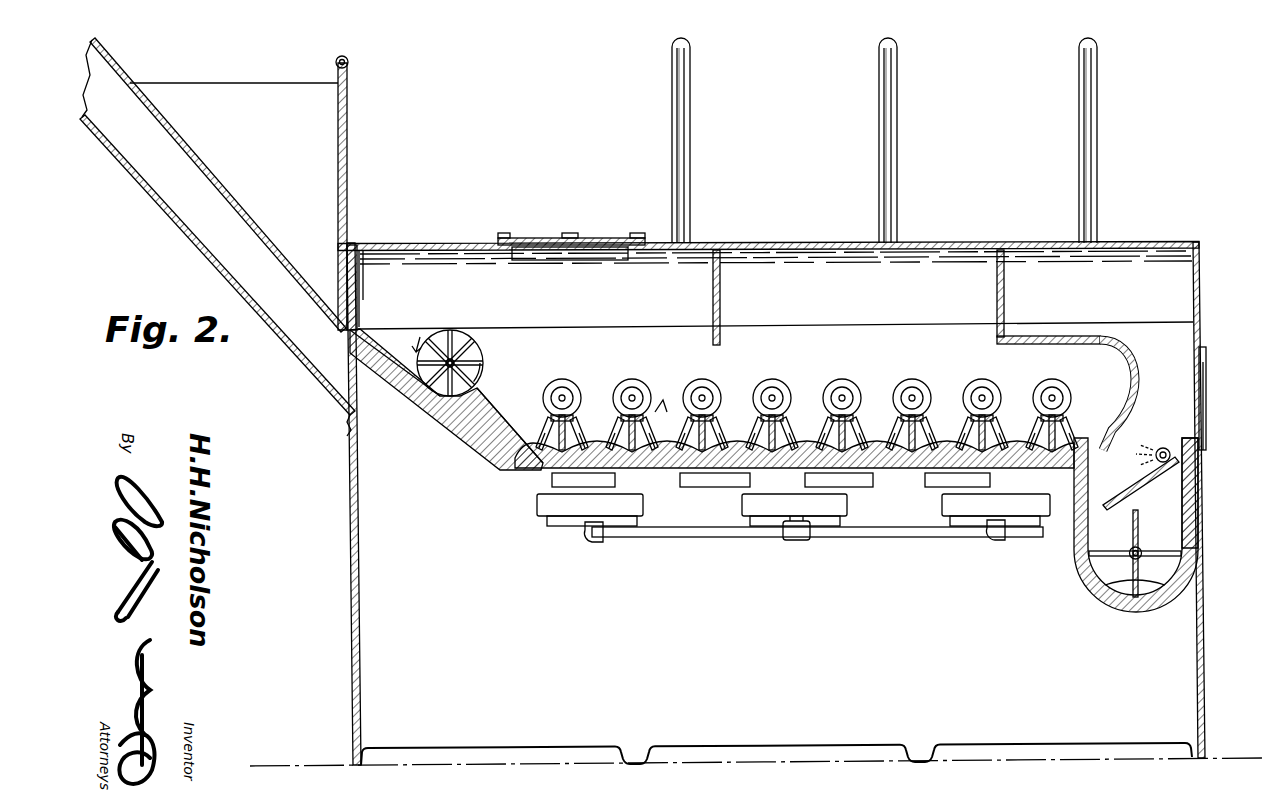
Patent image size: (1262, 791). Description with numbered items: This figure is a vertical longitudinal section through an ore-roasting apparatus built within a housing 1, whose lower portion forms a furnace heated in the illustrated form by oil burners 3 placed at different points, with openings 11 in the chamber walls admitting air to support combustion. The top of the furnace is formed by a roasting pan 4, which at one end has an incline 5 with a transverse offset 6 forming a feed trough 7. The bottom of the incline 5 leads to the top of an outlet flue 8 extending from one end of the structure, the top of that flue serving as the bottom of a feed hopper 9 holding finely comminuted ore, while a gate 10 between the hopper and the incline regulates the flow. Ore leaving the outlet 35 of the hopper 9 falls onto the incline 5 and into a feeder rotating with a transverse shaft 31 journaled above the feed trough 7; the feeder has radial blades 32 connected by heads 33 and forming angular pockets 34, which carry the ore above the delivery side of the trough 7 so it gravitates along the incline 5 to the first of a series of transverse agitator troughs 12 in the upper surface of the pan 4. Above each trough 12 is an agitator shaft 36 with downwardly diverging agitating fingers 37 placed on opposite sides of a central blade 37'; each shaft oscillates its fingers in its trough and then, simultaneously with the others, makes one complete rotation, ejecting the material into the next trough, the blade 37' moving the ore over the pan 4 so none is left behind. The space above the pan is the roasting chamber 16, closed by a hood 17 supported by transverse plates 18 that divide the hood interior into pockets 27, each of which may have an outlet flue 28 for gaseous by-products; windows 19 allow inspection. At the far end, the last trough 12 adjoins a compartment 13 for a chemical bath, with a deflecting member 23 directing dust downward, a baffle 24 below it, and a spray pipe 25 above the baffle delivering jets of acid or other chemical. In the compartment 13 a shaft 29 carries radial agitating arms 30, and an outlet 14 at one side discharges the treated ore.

The housing 1 is at (353, 602).
The oil burners 3 is at (565, 506).
The roasting pan 4 is at (656, 468).
The incline 5 is at (470, 438).
The transverse offset 6 is at (481, 398).
The feed trough 7 is at (432, 400).
The outlet flue 8 is at (298, 229).
The feed hopper 9 is at (287, 96).
The gate 10 is at (353, 262).
The openings 11 is at (552, 485).
The agitator troughs 12 is at (620, 445).
The compartment 13 is at (1165, 502).
The outlet 14 is at (1107, 590).
The roasting chamber 16 is at (775, 337).
The hood 17 is at (770, 243).
The transverse plates 18 is at (721, 299).
The windows 19 is at (546, 240).
The deflecting member 23 is at (1068, 336).
The baffle 24 is at (1150, 484).
The spray pipe 25 is at (1163, 447).
The pockets 27 is at (776, 280).
The outlet flue 28 is at (691, 148).
The shaft 29 is at (1139, 550).
The agitating arms 30 is at (1108, 556).
The transverse shaft 31 is at (452, 359).
The radial blades 32 is at (472, 350).
The heads 33 is at (440, 338).
The angular pockets 34 is at (476, 372).
The outlet of hopper 35 is at (355, 303).
The agitator shaft 36 is at (562, 396).
The agitating fingers 37 is at (794, 408).
The central blade 37' is at (576, 489).